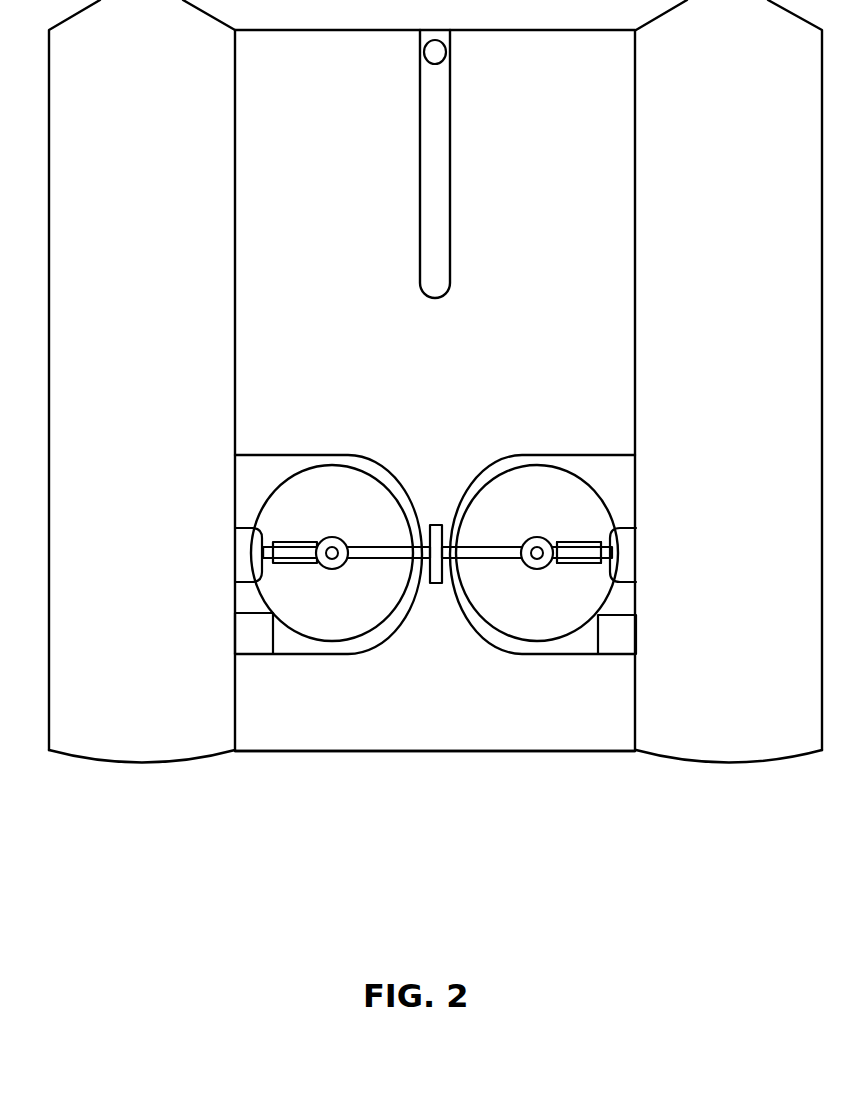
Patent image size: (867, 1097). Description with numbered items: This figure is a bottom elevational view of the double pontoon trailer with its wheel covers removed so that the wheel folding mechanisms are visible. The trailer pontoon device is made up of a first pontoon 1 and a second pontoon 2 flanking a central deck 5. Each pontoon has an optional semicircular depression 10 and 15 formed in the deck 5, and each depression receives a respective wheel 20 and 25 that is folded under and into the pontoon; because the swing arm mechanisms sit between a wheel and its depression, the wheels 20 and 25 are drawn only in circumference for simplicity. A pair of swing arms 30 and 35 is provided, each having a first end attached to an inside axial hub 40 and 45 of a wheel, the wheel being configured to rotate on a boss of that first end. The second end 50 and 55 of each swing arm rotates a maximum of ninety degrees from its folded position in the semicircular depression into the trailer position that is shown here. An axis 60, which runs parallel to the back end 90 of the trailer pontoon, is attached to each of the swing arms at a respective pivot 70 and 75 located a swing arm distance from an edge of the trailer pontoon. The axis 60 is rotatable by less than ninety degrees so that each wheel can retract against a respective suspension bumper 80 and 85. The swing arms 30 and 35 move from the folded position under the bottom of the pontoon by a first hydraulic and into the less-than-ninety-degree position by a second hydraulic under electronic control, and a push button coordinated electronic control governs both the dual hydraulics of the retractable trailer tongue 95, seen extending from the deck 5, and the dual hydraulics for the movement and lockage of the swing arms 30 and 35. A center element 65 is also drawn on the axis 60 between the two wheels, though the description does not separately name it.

The first pontoon 1 is at (152, 351).
The second pontoon 2 is at (733, 347).
The deck 5 is at (588, 128).
The semicircular depression 10 is at (622, 483).
The semicircular depression 15 is at (279, 458).
The wheel 20 is at (338, 477).
The wheel 25 is at (539, 475).
The swing arm 30 is at (563, 542).
The swing arm 35 is at (300, 545).
The inside axial hub 40 is at (335, 545).
The inside axial hub 45 is at (538, 560).
The second end of swing arm 50 is at (602, 563).
The second end of swing arm 55 is at (268, 553).
The axis 60 is at (384, 555).
The center block 65 is at (433, 523).
The pivot 70 is at (627, 561).
The pivot 75 is at (248, 549).
The suspension bumper 80 is at (250, 645).
The suspension bumper 85 is at (618, 637).
The back end 90 is at (436, 751).
The retractable trailer tongue 95 is at (435, 215).